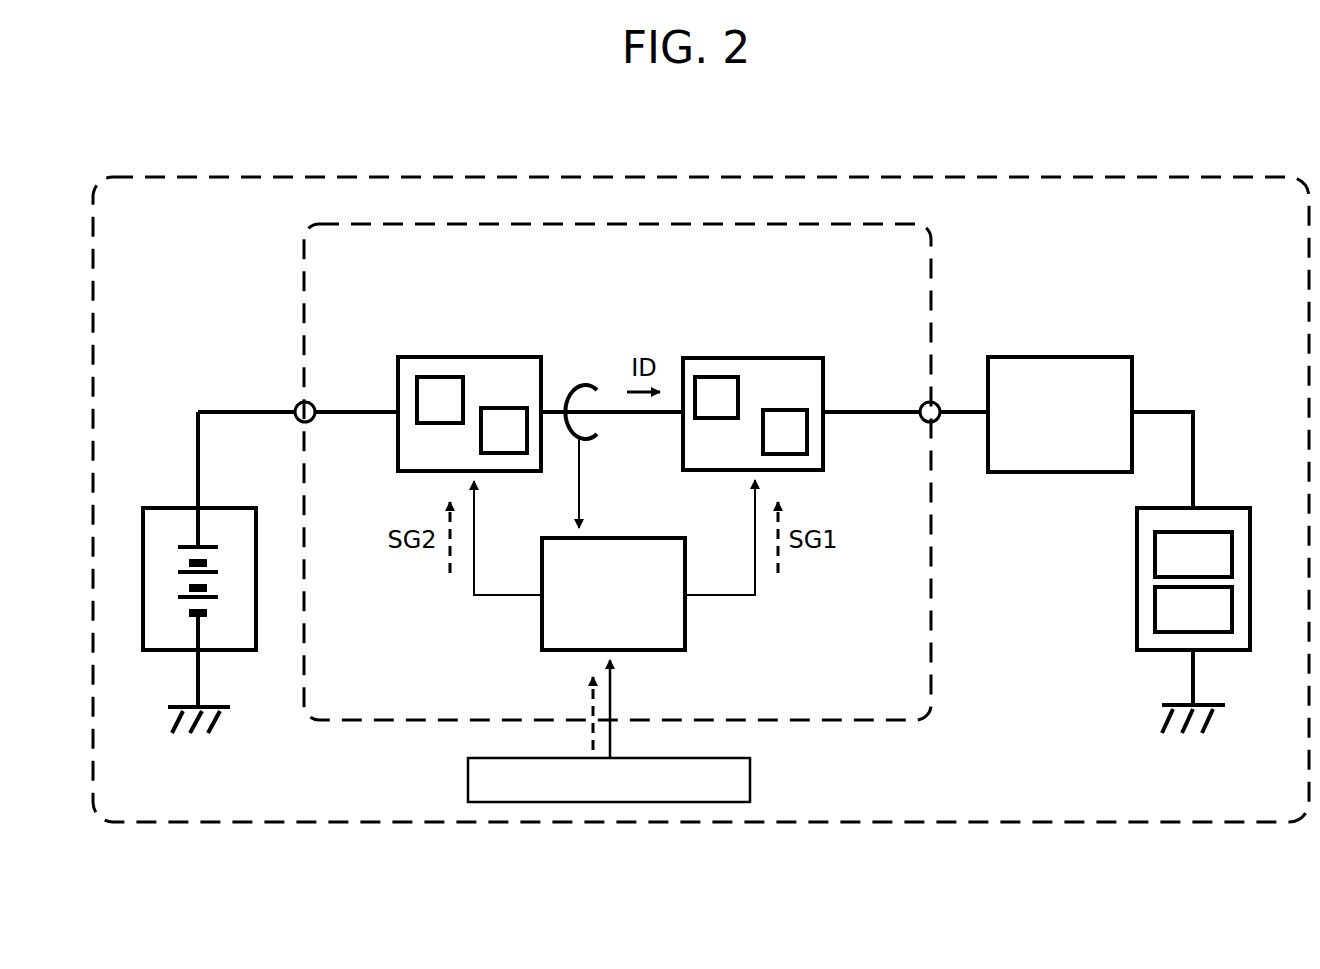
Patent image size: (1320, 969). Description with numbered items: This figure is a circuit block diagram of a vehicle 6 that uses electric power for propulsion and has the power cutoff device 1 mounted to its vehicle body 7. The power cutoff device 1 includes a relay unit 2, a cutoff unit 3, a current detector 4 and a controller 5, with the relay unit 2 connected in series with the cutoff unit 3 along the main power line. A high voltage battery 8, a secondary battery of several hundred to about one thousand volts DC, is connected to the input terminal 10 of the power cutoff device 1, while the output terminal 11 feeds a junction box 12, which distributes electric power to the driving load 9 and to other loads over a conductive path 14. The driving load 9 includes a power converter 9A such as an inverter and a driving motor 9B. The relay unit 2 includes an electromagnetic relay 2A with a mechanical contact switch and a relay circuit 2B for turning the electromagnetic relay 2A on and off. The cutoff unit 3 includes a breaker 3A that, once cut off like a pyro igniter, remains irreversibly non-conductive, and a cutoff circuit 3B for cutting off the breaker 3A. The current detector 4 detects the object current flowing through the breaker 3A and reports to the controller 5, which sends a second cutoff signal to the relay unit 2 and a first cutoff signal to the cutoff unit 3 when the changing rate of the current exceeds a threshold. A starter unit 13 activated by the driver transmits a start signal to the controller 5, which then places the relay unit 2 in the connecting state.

The power cutoff device 1 is at (907, 224).
The relay unit 2 is at (448, 380).
The electromagnetic relay 2A is at (417, 395).
The relay circuit 2B is at (504, 408).
The cutoff unit 3 is at (781, 395).
The breaker 3A is at (732, 377).
The cutoff circuit 3B is at (807, 440).
The current detector 4 is at (581, 386).
The controller 5 is at (685, 628).
The vehicle 6 is at (701, 547).
The vehicle body 7 is at (1147, 822).
The high voltage battery 8 is at (172, 507).
The driving load 9 is at (1150, 583).
The power converter 9A is at (1155, 557).
The driving motor 9B is at (1155, 607).
The input terminal 10 is at (297, 404).
The output terminal 11 is at (932, 400).
The junction box 12 is at (1132, 360).
The starter unit 13 is at (587, 803).
The conductive path 14 is at (1193, 412).